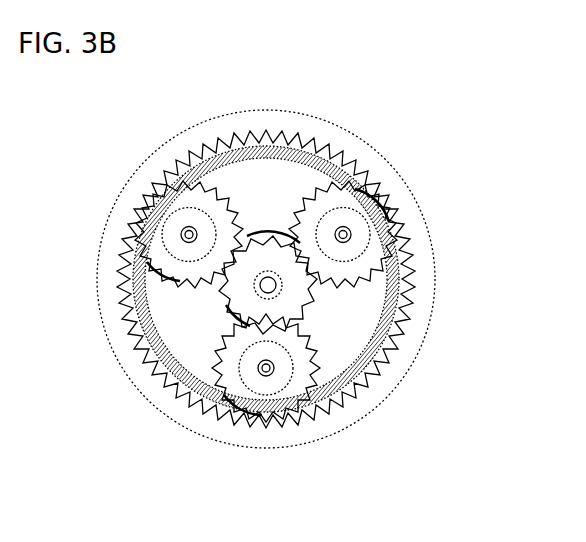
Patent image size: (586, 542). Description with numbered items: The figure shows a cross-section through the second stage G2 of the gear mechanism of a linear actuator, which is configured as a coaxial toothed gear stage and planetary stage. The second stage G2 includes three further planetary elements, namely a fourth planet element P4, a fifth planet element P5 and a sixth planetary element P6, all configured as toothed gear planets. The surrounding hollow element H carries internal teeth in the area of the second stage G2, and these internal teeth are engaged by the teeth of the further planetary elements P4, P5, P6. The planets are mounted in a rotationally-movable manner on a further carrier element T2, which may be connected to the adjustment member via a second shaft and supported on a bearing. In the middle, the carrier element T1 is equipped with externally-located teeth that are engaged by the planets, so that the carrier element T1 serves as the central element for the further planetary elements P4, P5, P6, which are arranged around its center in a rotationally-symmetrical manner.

The second stage G2 is at (344, 85).
The hollow element H is at (421, 222).
The carrier element T1 is at (232, 300).
The further carrier element T2 is at (350, 252).
The fourth planet element P4 is at (158, 203).
The fifth planet element P5 is at (350, 195).
The sixth planetary element P6 is at (263, 402).